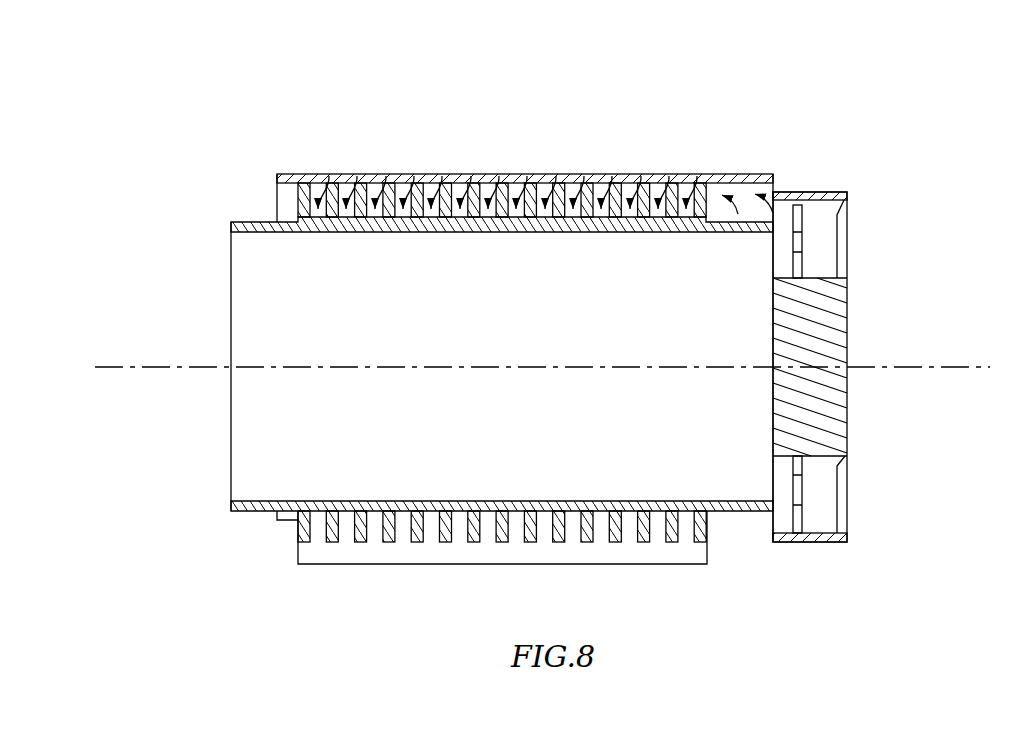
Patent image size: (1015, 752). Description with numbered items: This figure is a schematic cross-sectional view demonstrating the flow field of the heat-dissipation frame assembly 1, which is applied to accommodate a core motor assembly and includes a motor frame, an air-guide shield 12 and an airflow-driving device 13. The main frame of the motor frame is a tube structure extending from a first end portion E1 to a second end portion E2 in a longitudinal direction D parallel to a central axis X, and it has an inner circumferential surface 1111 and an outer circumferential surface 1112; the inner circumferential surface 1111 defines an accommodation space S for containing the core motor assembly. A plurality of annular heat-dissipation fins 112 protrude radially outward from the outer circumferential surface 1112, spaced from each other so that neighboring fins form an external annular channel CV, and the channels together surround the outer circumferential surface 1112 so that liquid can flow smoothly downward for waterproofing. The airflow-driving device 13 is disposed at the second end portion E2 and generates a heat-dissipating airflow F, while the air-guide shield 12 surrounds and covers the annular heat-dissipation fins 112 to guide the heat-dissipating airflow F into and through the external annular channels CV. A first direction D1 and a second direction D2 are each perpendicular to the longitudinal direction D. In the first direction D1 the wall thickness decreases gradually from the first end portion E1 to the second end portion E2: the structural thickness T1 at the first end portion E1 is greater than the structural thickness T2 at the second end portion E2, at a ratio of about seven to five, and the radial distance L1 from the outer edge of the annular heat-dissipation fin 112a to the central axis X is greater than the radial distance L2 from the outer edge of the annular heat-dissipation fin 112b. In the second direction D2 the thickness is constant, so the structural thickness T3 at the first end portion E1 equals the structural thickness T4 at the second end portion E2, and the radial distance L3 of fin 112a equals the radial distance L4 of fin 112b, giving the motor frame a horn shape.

The heat-dissipation frame assembly 1 is at (873, 72).
The air-guide shield 12 is at (662, 175).
The airflow-driving device 13 is at (847, 414).
The annular heat-dissipation fin 112 is at (515, 177).
The annular heat-dissipation fin 112a is at (299, 184).
The annular heat-dissipation fin 112b is at (700, 195).
The inner circumferential surface 1111 is at (590, 233).
The outer circumferential surface 1112 is at (598, 216).
The external annular channel CV is at (660, 523).
The accommodation space S is at (317, 312).
The central axis X is at (198, 370).
The heat-dissipating airflow F is at (785, 216).
The first end portion E1 is at (236, 196).
The second end portion E2 is at (760, 162).
The longitudinal direction D is at (448, 123).
The first direction D1 is at (159, 280).
The second direction D2 is at (159, 410).
The radial distance L1 is at (215, 193).
The radial distance L2 is at (853, 193).
The radial distance L3 is at (260, 542).
The radial distance L4 is at (853, 542).
The structural thickness T1 is at (231, 232).
The structural thickness T2 is at (853, 222).
The structural thickness T3 is at (222, 511).
The structural thickness T4 is at (853, 501).